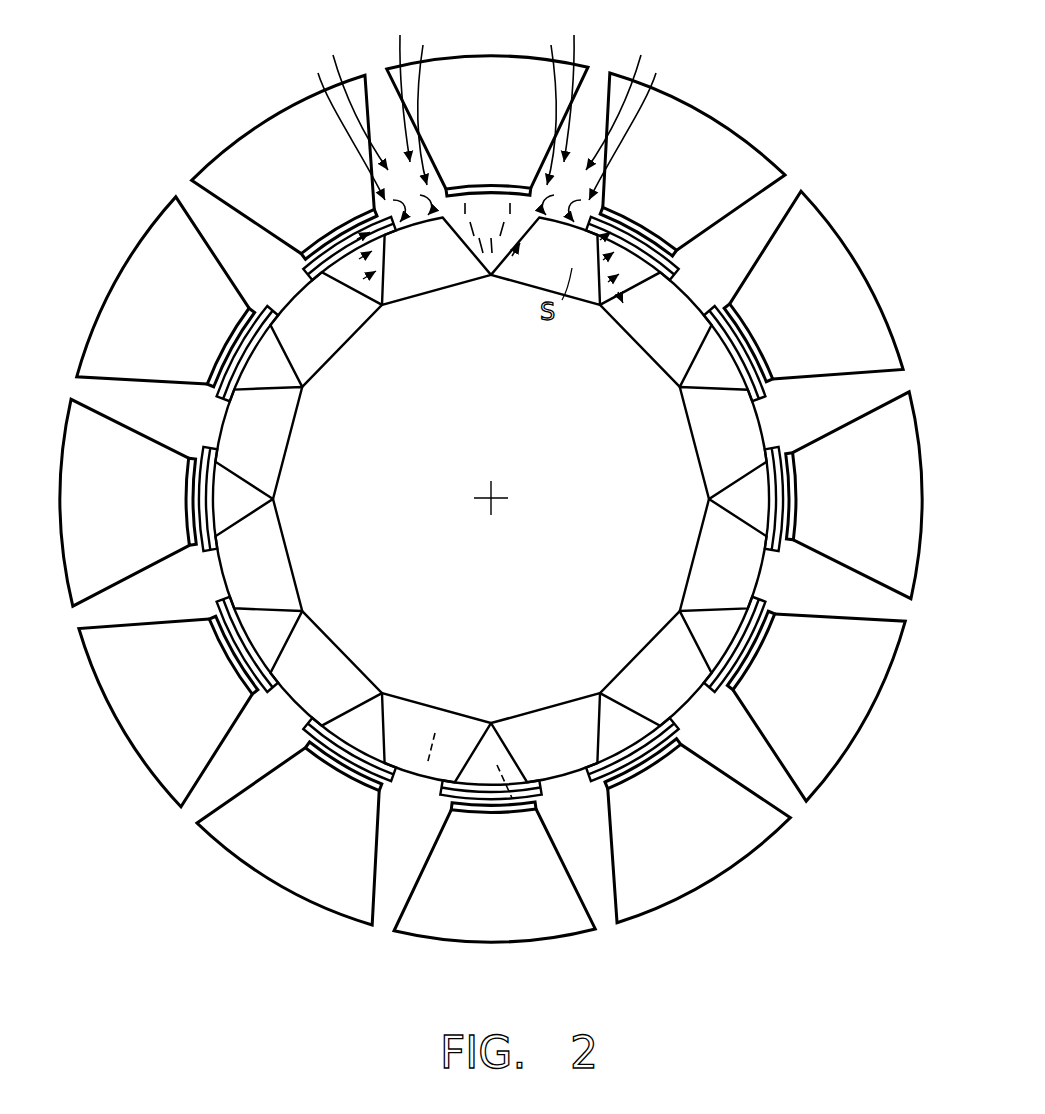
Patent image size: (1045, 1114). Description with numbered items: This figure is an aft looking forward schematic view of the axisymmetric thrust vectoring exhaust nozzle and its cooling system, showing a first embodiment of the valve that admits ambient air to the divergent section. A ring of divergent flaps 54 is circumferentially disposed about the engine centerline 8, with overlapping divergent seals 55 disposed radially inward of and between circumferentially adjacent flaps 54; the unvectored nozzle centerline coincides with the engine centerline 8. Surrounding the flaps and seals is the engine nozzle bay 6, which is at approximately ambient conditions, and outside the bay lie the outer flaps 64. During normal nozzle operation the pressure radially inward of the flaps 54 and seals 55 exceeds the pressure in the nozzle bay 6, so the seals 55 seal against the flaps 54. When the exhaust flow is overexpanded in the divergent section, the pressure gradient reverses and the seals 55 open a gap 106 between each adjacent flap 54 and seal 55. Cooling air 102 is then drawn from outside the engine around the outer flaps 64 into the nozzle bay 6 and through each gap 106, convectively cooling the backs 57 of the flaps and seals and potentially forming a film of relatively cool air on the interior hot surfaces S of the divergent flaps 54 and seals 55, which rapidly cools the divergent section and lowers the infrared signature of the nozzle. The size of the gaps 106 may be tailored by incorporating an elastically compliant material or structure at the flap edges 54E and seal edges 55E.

The nozzle bay 6 is at (728, 272).
The engine centerline 8 is at (503, 492).
The divergent flap 54 is at (716, 360).
The divergent seal 55 is at (668, 341).
The flap edge 54E is at (763, 441).
The seal edge 55E is at (784, 497).
The backs 57 is at (513, 802).
The outer flap 64 is at (753, 163).
The cooling air 102 is at (637, 53).
The gap 106 is at (603, 223).